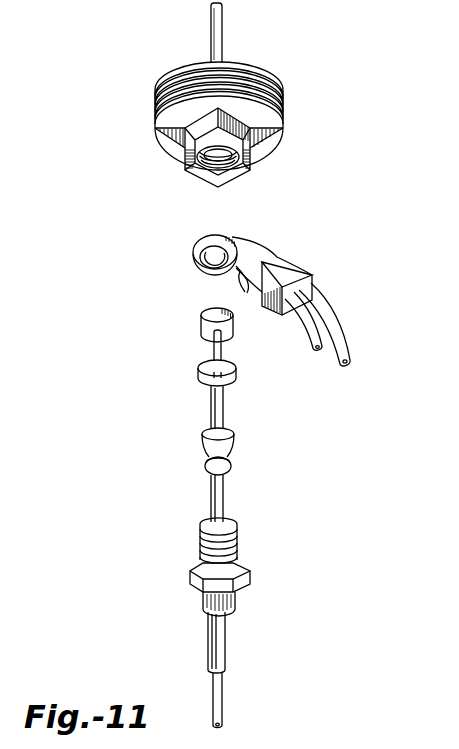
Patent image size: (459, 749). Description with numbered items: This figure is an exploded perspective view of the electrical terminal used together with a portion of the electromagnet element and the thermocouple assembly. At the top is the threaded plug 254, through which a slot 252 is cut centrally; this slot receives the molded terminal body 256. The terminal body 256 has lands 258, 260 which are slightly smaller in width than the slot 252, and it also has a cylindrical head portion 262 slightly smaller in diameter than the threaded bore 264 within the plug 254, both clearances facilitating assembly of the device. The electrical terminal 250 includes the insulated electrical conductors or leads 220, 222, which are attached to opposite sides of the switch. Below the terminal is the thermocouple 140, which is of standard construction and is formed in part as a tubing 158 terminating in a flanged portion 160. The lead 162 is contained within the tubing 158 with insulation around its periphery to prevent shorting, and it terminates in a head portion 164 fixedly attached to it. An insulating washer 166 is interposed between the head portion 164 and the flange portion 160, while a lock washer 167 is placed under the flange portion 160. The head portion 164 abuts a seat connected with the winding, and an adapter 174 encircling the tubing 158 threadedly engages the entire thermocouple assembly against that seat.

The threaded plug 254 is at (274, 96).
The slot 252 is at (270, 141).
The threaded bore 264 is at (214, 169).
The cylindrical head portion 262 is at (211, 235).
The molded terminal body 256 is at (195, 264).
The land 258 is at (240, 273).
The land 260 is at (250, 295).
The electrical terminal 250 is at (313, 284).
The insulated electrical conductor 220 is at (317, 289).
The insulated electrical conductor 222 is at (305, 320).
The head portion 164 is at (201, 329).
The lead 162 is at (213, 349).
The insulating washer 166 is at (199, 373).
The flanged portion 160 is at (203, 435).
The lock washer 167 is at (205, 465).
The tubing 158 is at (210, 492).
The adapter 174 is at (196, 573).
The thermocouple 140 is at (208, 638).